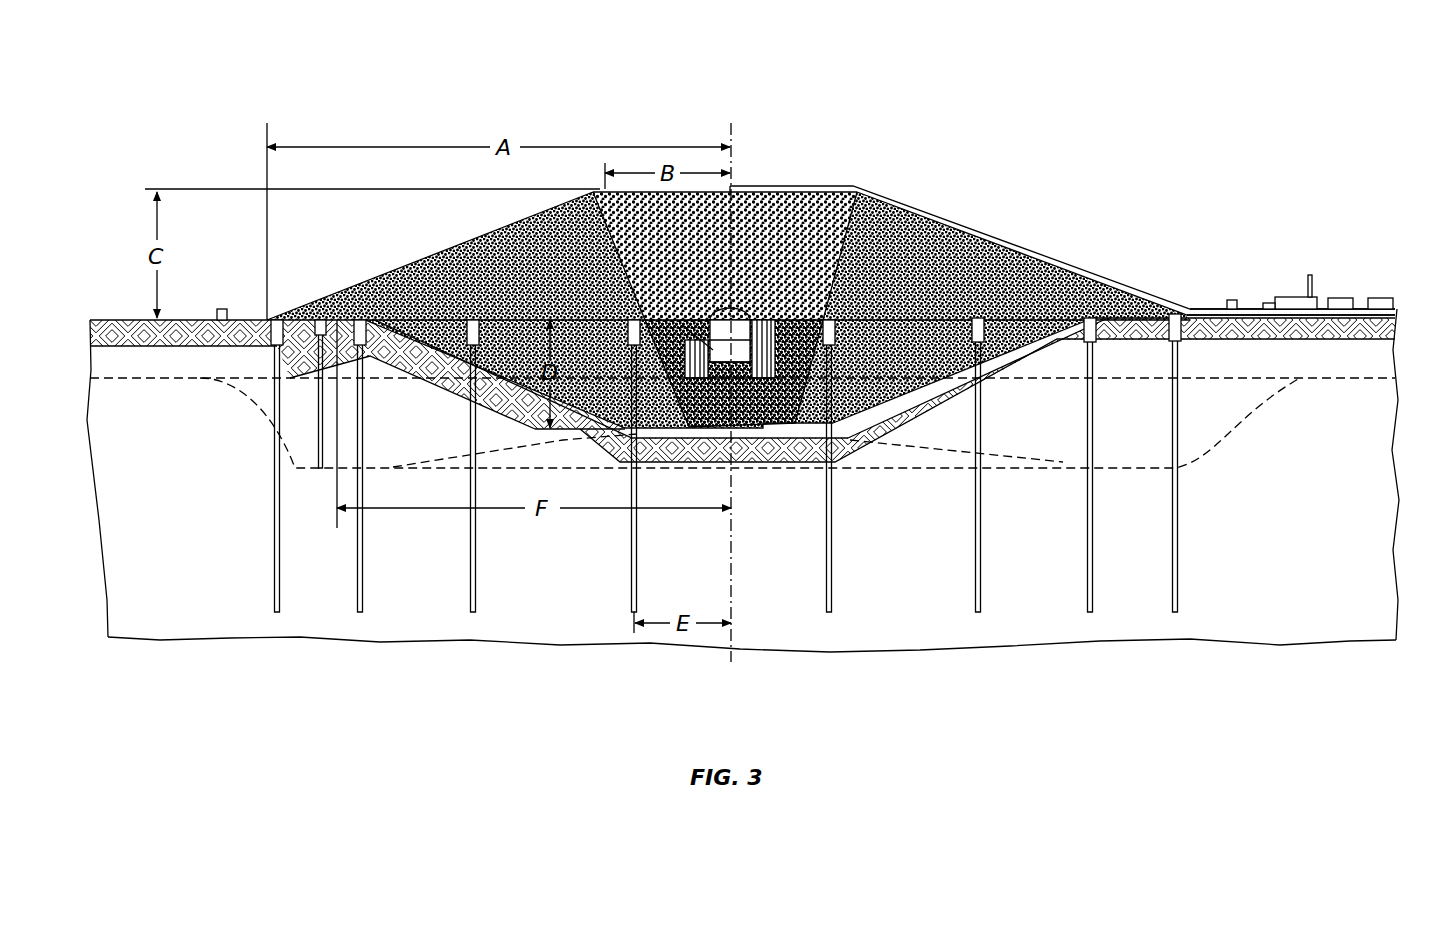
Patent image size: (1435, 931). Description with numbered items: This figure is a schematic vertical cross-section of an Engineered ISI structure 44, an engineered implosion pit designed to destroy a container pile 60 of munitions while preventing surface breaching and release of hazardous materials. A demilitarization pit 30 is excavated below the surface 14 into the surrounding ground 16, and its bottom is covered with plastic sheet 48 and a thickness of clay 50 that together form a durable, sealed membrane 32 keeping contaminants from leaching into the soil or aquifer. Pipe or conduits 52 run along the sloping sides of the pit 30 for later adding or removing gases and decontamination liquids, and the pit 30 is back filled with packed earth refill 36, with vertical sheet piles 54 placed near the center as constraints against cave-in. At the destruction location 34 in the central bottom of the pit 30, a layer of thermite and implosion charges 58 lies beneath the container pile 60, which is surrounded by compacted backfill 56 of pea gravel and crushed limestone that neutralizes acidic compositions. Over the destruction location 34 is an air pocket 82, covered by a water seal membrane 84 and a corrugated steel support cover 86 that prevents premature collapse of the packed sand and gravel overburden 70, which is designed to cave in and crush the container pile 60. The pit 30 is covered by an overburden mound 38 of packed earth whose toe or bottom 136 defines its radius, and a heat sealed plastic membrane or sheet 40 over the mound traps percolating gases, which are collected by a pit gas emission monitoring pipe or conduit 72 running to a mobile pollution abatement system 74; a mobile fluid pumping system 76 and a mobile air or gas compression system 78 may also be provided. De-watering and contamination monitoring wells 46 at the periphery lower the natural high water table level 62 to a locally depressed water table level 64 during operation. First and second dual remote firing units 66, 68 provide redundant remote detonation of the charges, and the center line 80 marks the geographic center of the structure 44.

The surface 14 is at (142, 318).
The subsurface soil 16 is at (198, 489).
The demilitarization pit 30 is at (930, 416).
The durable, sealed membrane 32 is at (1003, 378).
The destruction location 34 is at (745, 383).
The packed earth refill 36 is at (914, 357).
The overburden mound 38 is at (584, 290).
The heat sealed membrane or sheet 40 is at (455, 246).
The Engineered ISI structure 44 is at (468, 117).
The de-watering and contamination monitoring wells 46 is at (272, 345).
The plastic sheet 48 is at (536, 404).
The clay 50 is at (580, 413).
The pipe or conduits 52 is at (1047, 318).
The vertical sheet piles 54 is at (818, 320).
The compacted backfill 56 is at (730, 400).
The thermite and implosion charges 58 is at (735, 370).
The container pile 60 is at (684, 330).
The natural high water table level 62 is at (1107, 375).
The locally depressed water table level 64 is at (943, 446).
The first dual remote firing unit 66 is at (220, 309).
The second dual remote firing unit 68 is at (1228, 300).
The packed sand and gravel overburden 70 is at (786, 240).
The pit gas emission monitoring pipe or conduit 72 is at (798, 184).
The mobile pollution abatement system 74 is at (1283, 297).
The mobile fluid pumping system 76 is at (1340, 298).
The mobile air or gas compression system 78 is at (1380, 298).
The center line 80 is at (736, 137).
The air pocket 82 is at (712, 310).
The water seal membrane 84 is at (750, 306).
The corrugated steel support cover 86 is at (779, 322).
The toe or bottom 136 is at (268, 319).